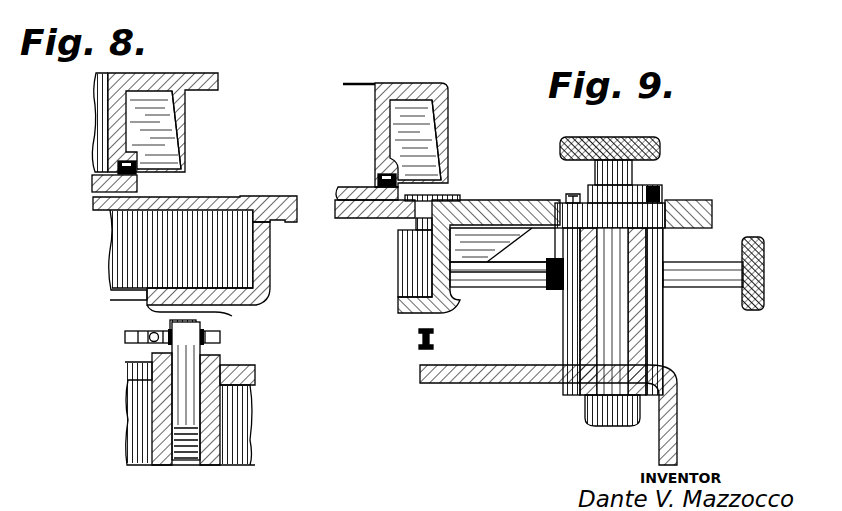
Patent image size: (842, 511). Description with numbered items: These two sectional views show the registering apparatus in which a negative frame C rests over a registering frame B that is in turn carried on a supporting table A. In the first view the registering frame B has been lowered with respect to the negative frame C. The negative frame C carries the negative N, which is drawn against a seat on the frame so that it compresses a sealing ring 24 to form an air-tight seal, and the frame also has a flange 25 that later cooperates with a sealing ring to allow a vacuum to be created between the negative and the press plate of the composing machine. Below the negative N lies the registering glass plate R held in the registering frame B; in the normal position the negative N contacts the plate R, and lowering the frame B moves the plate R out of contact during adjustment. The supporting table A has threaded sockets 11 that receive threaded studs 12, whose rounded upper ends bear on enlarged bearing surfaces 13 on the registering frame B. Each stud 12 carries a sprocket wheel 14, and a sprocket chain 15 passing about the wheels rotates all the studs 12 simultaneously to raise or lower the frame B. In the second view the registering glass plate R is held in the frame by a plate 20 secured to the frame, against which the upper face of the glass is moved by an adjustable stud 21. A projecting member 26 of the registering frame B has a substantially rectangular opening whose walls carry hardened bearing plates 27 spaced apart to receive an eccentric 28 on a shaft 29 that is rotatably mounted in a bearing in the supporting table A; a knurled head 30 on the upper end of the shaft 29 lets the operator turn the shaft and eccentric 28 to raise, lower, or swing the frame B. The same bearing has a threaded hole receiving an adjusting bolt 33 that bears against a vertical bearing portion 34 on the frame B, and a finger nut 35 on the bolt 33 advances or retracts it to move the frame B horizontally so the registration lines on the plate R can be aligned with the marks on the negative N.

In FIG. 8, the negative frame C is at (153, 73).
In FIG. 9, the negative frame C is at (449, 97).
In FIG. 8, the flange 25 is at (184, 122).
In FIG. 9, the flange 25 is at (446, 134).
In FIG. 8, the sealing ring 24 is at (136, 167).
In FIG. 9, the sealing ring 24 is at (398, 177).
In FIG. 8, the negative N is at (138, 183).
In FIG. 9, the negative N is at (358, 190).
In FIG. 8, the registering glass plate R is at (214, 197).
In FIG. 9, the registering glass plate R is at (353, 219).
In FIG. 8, the registering frame B is at (271, 268).
In FIG. 9, the registering frame B is at (505, 201).
In FIG. 8, the enlarged bearing surfaces 13 is at (233, 317).
In FIG. 8, the sprocket wheel 14 is at (170, 326).
In FIG. 8, the sprocket chain 15 is at (123, 342).
In FIG. 9, the sprocket chain 15 is at (435, 340).
In FIG. 8, the threaded stud 12 is at (208, 352).
In FIG. 8, the threaded socket 11 is at (214, 408).
In FIG. 8, the supporting table A is at (262, 421).
In FIG. 9, the supporting table A is at (678, 383).
In FIG. 9, the adjustable stud 21 is at (414, 227).
In FIG. 9, the plate 20 is at (447, 196).
In FIG. 9, the hardened bearing plate 27 is at (571, 194).
In FIG. 9, the eccentric 28 is at (663, 195).
In FIG. 9, the shaft 29 is at (633, 175).
In FIG. 9, the knurled head 30 is at (651, 137).
In FIG. 9, the projecting member 26 is at (713, 208).
In FIG. 9, the adjusting bolt 33 is at (689, 263).
In FIG. 9, the finger nut 35 is at (750, 311).
In FIG. 9, the vertical bearing portion 34 is at (452, 292).